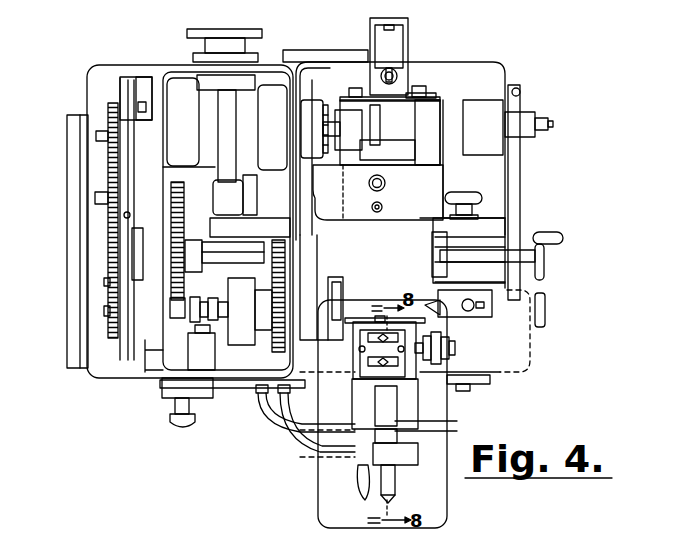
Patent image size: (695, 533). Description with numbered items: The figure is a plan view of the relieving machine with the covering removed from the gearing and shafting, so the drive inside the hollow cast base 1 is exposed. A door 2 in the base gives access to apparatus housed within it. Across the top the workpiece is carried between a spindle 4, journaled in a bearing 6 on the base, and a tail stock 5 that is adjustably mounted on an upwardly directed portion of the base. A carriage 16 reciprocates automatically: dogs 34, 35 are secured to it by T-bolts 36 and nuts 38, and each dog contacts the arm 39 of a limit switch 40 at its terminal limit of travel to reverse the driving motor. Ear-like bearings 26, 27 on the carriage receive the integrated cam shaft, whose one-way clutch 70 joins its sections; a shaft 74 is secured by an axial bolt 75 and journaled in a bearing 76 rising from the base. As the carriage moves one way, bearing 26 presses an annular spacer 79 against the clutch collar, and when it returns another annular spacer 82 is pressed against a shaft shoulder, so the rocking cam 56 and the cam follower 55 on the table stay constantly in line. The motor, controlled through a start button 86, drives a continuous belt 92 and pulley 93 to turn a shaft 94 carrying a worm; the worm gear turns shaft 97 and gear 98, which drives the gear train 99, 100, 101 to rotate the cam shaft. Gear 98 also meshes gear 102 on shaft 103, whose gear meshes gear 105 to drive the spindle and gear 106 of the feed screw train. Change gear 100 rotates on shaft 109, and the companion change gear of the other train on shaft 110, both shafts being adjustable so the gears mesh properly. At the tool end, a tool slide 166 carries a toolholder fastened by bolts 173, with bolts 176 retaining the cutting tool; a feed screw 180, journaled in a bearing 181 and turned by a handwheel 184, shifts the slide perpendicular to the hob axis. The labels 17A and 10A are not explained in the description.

The base 1 is at (85, 76).
The door 2 is at (521, 204).
The spindle 4 is at (183, 318).
The tail stock 5 is at (480, 315).
The bearing 6 is at (330, 308).
The carriage 16 is at (438, 200).
The plate 17A is at (365, 318).
The bearing 26 is at (356, 165).
The bearing 27 is at (430, 150).
The dog 34 is at (365, 88).
The dog 35 is at (425, 87).
The T-bolt 36 is at (432, 98).
The nut 38 is at (350, 97).
The arm 39 is at (414, 65).
The limit switch 40 is at (408, 38).
The cam follower 55 is at (382, 155).
The rocking cam 56 is at (381, 115).
The one-way clutch 70 is at (312, 98).
The shaft 74 is at (453, 132).
The bolt 75 is at (550, 134).
The bearing 76 is at (480, 105).
The annular spacer 79 is at (334, 160).
The annular spacer 82 is at (372, 128).
The start button 86 is at (462, 393).
The continuous belt 92 is at (262, 33).
The pulley 93 is at (258, 47).
The shaft 94 is at (220, 123).
The shaft 97 is at (192, 182).
The gear 98 is at (184, 200).
The gear 99 is at (108, 228).
The change gear 100 is at (108, 182).
The gear 101 is at (106, 118).
The gear 102 is at (204, 240).
The shaft 103 is at (235, 258).
The gear 105 is at (278, 343).
The gear 106 is at (112, 340).
The shaft 109 is at (108, 210).
The shaft 110 is at (108, 285).
The block 10A is at (270, 268).
The tool slide 166 is at (437, 425).
The bolt 173 is at (360, 350).
The bolt 176 is at (383, 372).
The feed screw 180 is at (425, 434).
The bearing 181 is at (405, 452).
The handwheel 184 is at (398, 480).